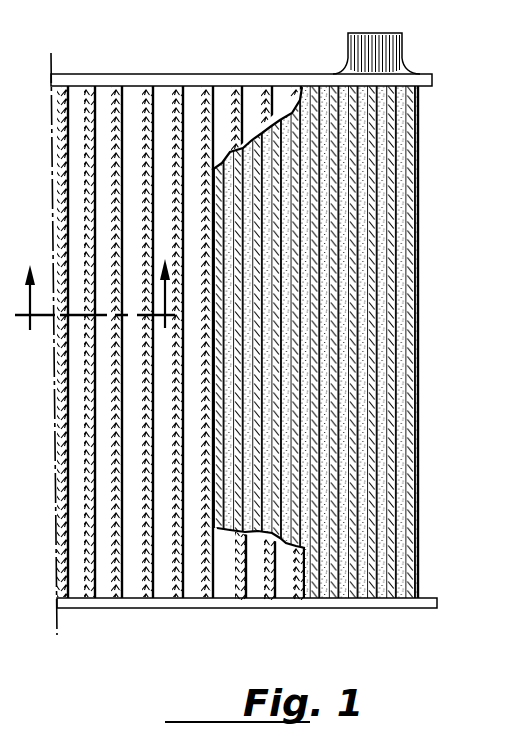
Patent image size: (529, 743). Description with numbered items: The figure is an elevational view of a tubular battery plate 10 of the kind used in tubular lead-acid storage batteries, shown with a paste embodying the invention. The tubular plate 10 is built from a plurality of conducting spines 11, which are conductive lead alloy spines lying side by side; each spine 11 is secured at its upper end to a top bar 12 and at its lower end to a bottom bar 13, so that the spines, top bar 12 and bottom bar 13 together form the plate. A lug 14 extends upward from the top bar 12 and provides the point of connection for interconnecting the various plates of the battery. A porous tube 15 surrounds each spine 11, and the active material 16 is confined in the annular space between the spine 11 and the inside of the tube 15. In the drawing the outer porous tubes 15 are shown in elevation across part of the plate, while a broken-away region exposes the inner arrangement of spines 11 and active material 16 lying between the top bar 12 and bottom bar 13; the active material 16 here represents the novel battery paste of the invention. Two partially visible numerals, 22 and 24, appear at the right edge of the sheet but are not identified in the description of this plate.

The tubular plate 10 is at (272, 340).
The conducting spines 11 is at (388, 283).
The top bar 12 is at (193, 78).
The bottom bar 13 is at (223, 602).
The lug 14 is at (398, 42).
The porous tube 15 is at (282, 103).
The active material 16 is at (418, 322).
The element 22 is at (522, 329).
The element 24 is at (515, 393).